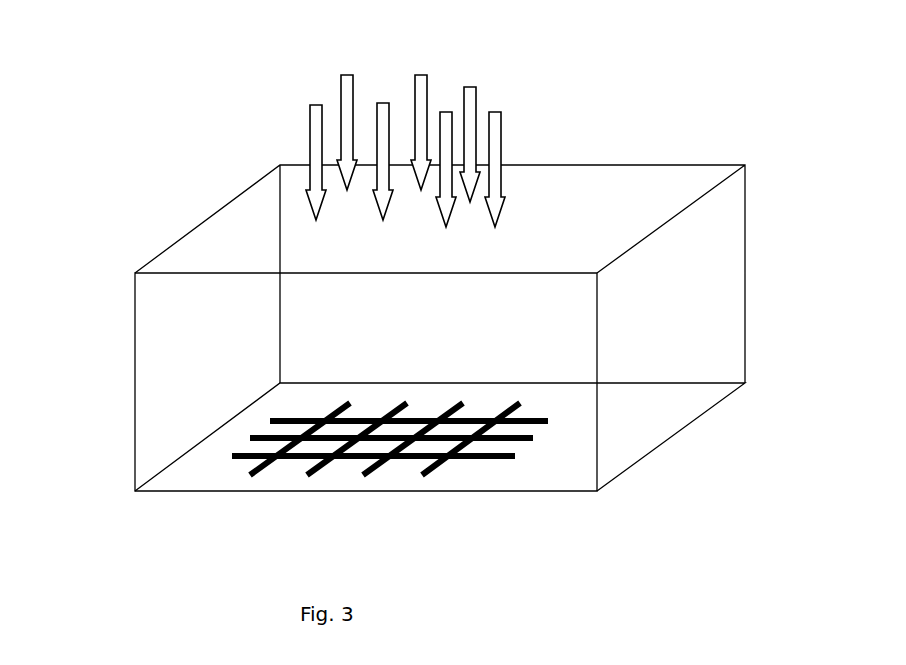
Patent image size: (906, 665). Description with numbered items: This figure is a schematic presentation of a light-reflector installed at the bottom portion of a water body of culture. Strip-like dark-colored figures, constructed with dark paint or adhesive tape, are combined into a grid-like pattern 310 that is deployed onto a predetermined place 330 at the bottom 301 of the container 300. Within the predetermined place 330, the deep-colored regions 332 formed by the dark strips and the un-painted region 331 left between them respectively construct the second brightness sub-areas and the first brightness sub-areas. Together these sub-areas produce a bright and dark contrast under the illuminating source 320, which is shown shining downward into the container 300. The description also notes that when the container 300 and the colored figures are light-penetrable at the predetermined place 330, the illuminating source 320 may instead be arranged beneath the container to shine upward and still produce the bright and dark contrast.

The container 300 is at (394, 330).
The bottom 301 is at (190, 473).
The grid-like pattern 310 is at (513, 447).
The illuminating source 320 is at (382, 103).
The predetermined place 330 is at (526, 420).
The un-painted region 331 is at (550, 418).
The deep-colored regions 332 is at (510, 443).